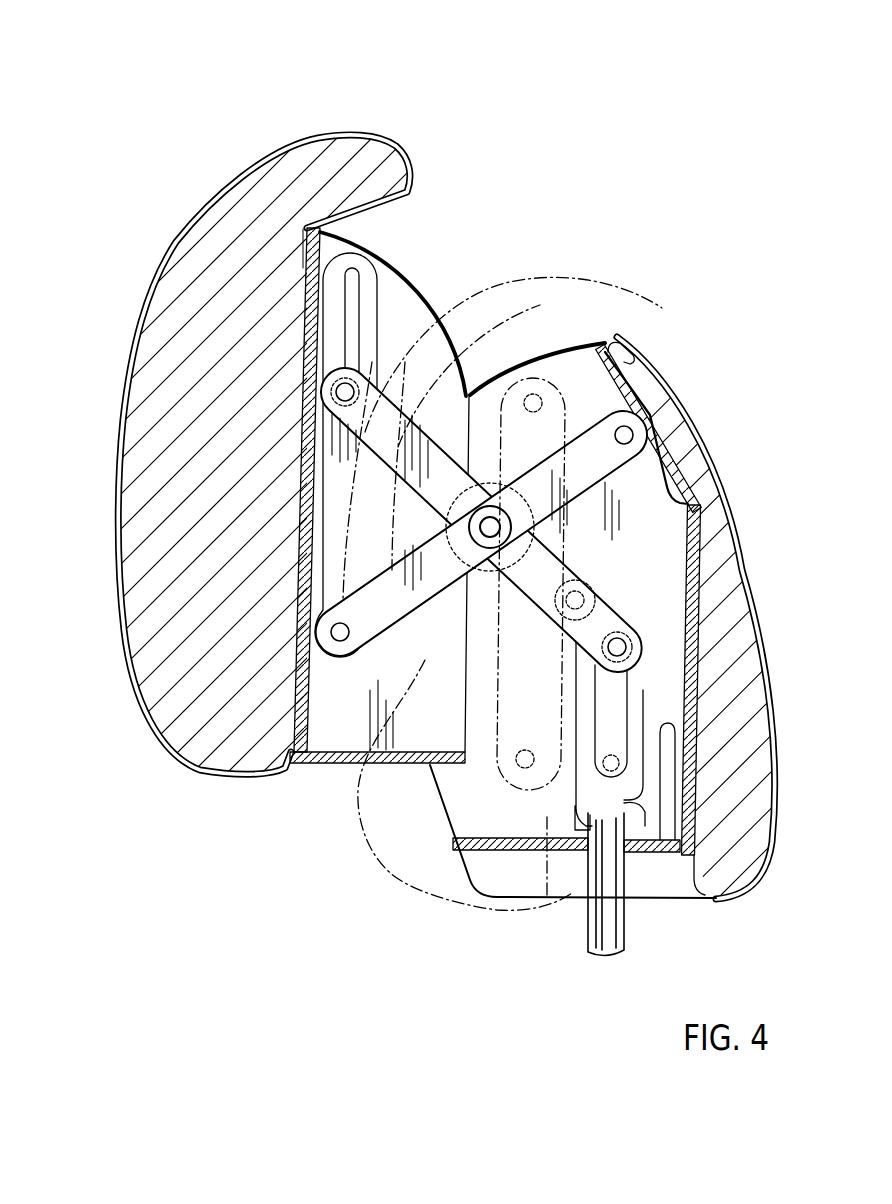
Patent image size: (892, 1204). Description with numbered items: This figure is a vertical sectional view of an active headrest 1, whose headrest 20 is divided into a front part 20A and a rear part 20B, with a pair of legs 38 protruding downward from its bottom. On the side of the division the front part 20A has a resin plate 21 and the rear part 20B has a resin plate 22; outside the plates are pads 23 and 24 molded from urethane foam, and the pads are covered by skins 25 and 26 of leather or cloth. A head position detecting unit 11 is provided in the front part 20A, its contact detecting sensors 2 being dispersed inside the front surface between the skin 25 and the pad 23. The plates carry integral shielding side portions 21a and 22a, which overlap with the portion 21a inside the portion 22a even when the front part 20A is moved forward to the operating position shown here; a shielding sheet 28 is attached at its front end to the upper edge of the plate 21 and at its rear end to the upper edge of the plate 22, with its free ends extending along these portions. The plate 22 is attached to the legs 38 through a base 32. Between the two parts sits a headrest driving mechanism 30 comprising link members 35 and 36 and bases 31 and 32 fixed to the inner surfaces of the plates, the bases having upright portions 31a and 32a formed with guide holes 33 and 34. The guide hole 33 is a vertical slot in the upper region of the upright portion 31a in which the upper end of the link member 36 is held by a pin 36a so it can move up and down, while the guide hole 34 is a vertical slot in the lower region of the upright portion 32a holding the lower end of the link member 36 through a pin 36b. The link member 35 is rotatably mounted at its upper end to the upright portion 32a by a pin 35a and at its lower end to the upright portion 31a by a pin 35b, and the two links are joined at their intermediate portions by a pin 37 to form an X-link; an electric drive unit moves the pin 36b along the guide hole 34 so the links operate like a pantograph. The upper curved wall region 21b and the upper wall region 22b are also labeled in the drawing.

The active headrest 1 is at (402, 104).
The contact detecting sensor 2 is at (166, 265).
The head position detecting unit 11 is at (195, 199).
The headrest 20 is at (215, 797).
The front part 20A is at (128, 230).
The rear part 20B is at (726, 411).
The plate 21 is at (300, 646).
The shielding side portion 21a is at (400, 328).
The curved wall portion 21b is at (402, 261).
The plate 22 is at (690, 632).
The shielding side portion 22a is at (363, 782).
The upper wall portion 22b is at (553, 351).
The pad 23 is at (178, 413).
The pad 24 is at (745, 703).
The skin 25 is at (136, 352).
The skin 26 is at (712, 600).
The shielding sheet 28 is at (462, 362).
The headrest driving mechanism 30 is at (669, 525).
The base 31 is at (390, 324).
The upright portion 31a is at (340, 473).
The base 32 is at (668, 475).
The upright portion 32a is at (653, 693).
The guide hole 33 is at (350, 305).
The guide hole 34 is at (618, 748).
The link member 35 is at (572, 440).
The pin 35a is at (636, 427).
The pin 35b is at (337, 656).
The link member 36 is at (340, 522).
The pin 36a is at (337, 394).
The pin 36b is at (635, 634).
The pin 37 is at (487, 534).
The leg 38 is at (614, 927).